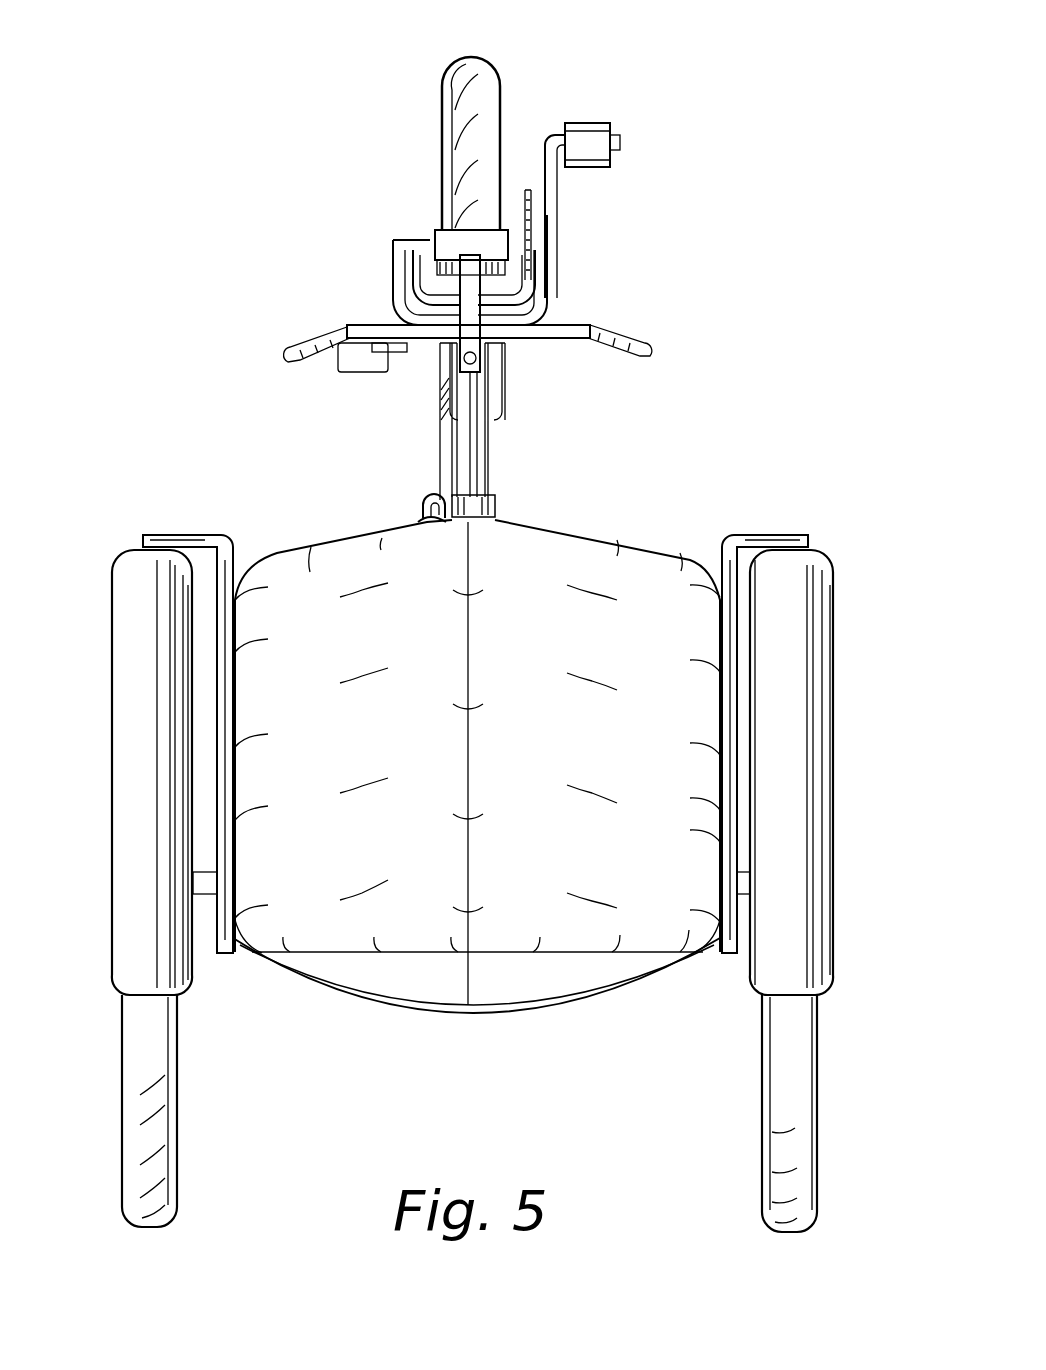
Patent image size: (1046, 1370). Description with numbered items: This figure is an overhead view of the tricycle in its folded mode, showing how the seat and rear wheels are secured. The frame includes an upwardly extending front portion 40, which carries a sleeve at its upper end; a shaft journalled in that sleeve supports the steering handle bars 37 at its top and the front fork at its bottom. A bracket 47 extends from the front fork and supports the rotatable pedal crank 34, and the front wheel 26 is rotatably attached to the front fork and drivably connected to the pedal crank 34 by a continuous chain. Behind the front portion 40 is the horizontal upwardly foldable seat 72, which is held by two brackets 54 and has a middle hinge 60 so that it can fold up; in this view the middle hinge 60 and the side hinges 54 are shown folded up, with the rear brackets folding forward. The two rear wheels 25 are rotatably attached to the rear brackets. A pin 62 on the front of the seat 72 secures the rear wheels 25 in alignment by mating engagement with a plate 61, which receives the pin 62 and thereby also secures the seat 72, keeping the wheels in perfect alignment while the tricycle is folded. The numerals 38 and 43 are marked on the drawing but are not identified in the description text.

The rear wheels 25 is at (120, 1105).
The front wheel 26 is at (490, 62).
The pedal crank 34 is at (466, 230).
The steering handle bars 37 is at (595, 325).
The brake lever bracket 38 is at (605, 123).
The front portion 40 is at (478, 446).
The lower collar 43 is at (488, 497).
The bracket 47 is at (500, 292).
The brackets 54 is at (722, 700).
The middle hinge 60 is at (468, 952).
The plate 61 is at (430, 492).
The pin 62 is at (425, 518).
The seat 72 is at (680, 798).